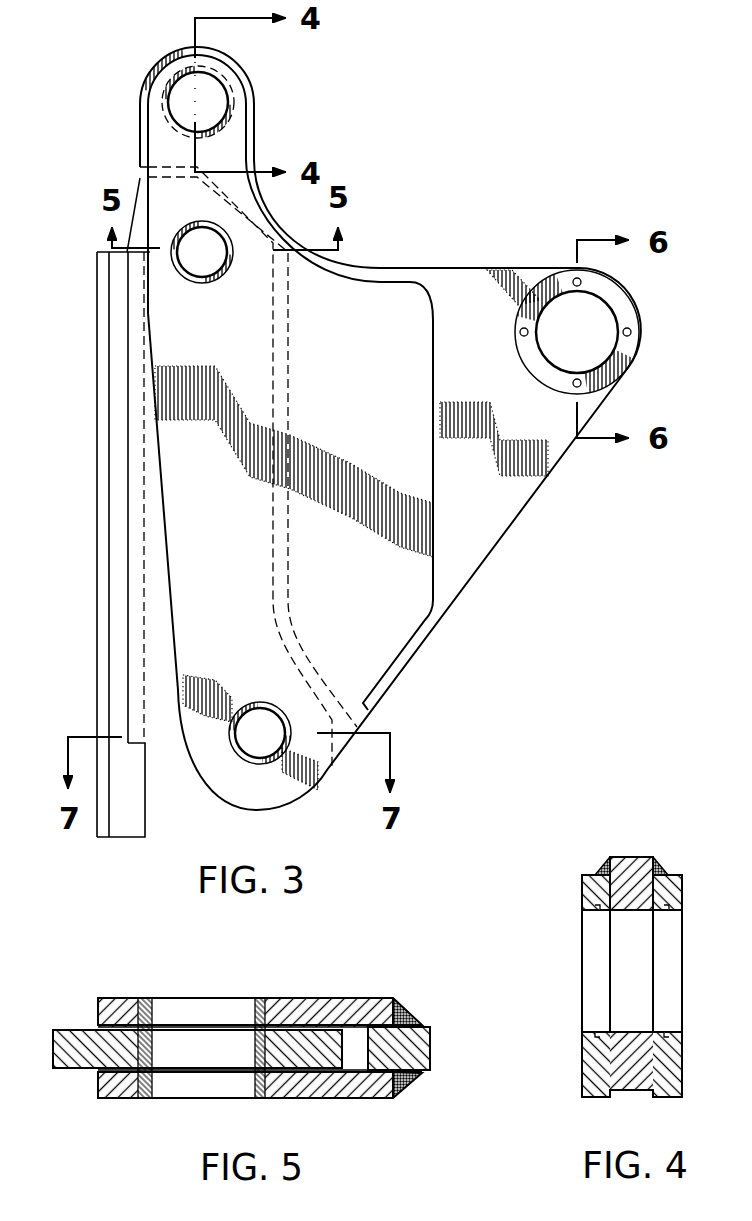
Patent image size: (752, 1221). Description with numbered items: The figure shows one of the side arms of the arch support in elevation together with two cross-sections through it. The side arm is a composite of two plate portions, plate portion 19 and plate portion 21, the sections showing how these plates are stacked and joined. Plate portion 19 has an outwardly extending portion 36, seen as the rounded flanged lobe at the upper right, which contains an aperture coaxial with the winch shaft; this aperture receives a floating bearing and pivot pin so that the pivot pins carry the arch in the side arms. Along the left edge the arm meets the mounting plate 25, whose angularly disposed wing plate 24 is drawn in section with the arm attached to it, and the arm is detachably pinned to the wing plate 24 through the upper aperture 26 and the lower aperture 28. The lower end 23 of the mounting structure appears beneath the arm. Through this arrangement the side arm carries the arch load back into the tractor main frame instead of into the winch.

In FIG. 3, the plate portion 19 is at (248, 86).
In FIG. 5, the plate portion 19 is at (407, 1047).
In FIG. 4, the plate portion 19 is at (640, 855).
In FIG. 3, the plate portion 21 is at (388, 633).
In FIG. 5, the plate portion 21 is at (325, 997).
In FIG. 4, the plate portion 21 is at (588, 892).
In FIG. 3, the bar end block 23 is at (170, 720).
In FIG. 5, the wing plate 24 is at (68, 1030).
In FIG. 3, the mounting plate 25 is at (100, 427).
In FIG. 3, the upper aperture 26 is at (185, 100).
In FIG. 3, the lower aperture 28 is at (257, 747).
In FIG. 3, the outwardly extending portion 36 is at (475, 267).